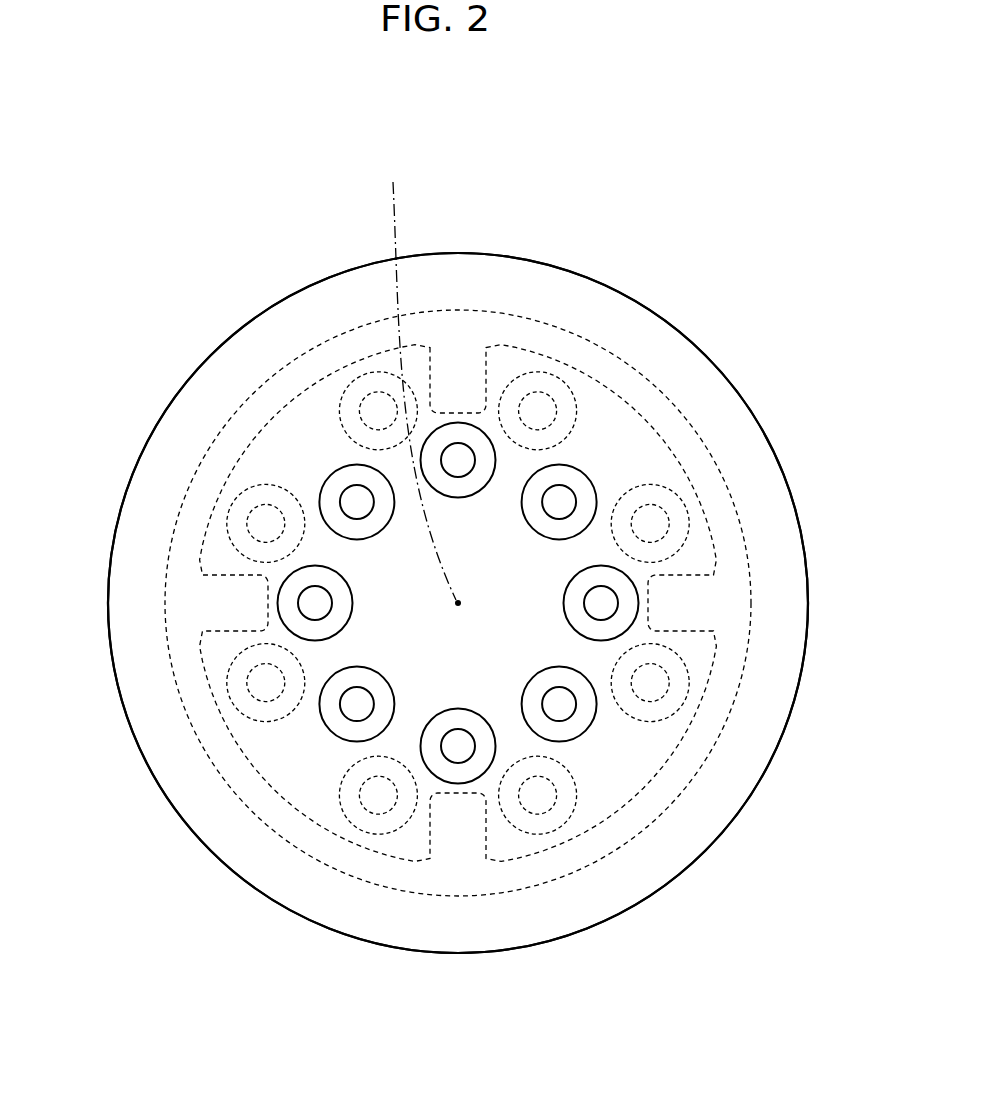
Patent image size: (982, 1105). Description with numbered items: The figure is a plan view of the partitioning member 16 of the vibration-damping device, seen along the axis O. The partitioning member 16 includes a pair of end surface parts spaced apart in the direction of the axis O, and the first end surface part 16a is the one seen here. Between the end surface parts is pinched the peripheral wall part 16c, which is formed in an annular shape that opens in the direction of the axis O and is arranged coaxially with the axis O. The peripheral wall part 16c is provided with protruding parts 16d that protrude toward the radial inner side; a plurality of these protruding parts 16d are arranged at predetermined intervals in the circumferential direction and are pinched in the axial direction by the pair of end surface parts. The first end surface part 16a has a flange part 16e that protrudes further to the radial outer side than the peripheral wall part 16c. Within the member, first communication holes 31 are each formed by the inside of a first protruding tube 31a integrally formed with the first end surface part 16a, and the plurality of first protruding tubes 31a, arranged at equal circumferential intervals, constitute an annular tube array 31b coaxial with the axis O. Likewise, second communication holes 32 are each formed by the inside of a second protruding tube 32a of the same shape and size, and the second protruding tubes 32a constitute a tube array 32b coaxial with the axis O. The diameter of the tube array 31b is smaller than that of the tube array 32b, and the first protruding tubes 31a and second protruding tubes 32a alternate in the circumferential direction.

The partitioning member 16 is at (178, 178).
The first end surface part 16a is at (208, 358).
The peripheral wall part 16c is at (217, 457).
The protruding part 16d is at (206, 530).
The flange part 16e is at (293, 295).
The axis O is at (421, 379).
The first communication hole 31 is at (327, 613).
The first protruding tube 31a is at (478, 442).
The tube array 31b is at (588, 359).
The second communication hole 32 is at (282, 680).
The second protruding tube 32a is at (556, 810).
The tube array 32b is at (652, 826).